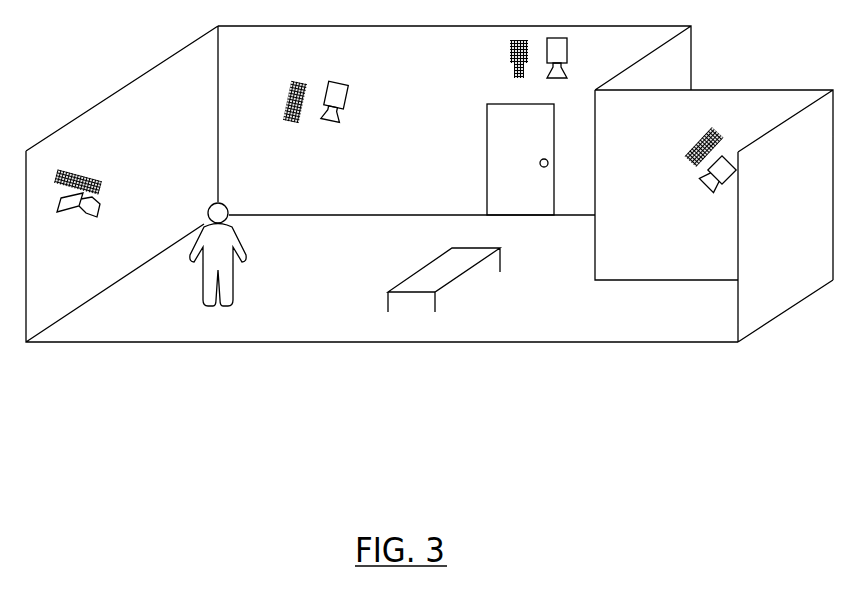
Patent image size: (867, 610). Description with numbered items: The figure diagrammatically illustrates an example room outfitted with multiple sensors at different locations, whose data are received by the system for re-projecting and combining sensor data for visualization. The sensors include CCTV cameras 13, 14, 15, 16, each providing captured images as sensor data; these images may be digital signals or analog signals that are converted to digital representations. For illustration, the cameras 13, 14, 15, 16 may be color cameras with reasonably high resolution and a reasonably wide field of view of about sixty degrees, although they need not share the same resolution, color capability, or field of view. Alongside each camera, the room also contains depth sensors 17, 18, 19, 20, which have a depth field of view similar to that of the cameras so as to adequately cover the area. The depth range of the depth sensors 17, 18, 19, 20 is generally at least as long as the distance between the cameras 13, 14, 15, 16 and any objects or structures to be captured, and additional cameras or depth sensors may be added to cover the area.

The CCTV camera 13 is at (78, 164).
The CCTV camera 14 is at (278, 84).
The CCTV camera 15 is at (501, 53).
The CCTV camera 16 is at (693, 138).
The depth sensor 17 is at (70, 222).
The depth sensor 18 is at (349, 87).
The depth sensor 19 is at (576, 53).
The depth sensor 20 is at (717, 195).